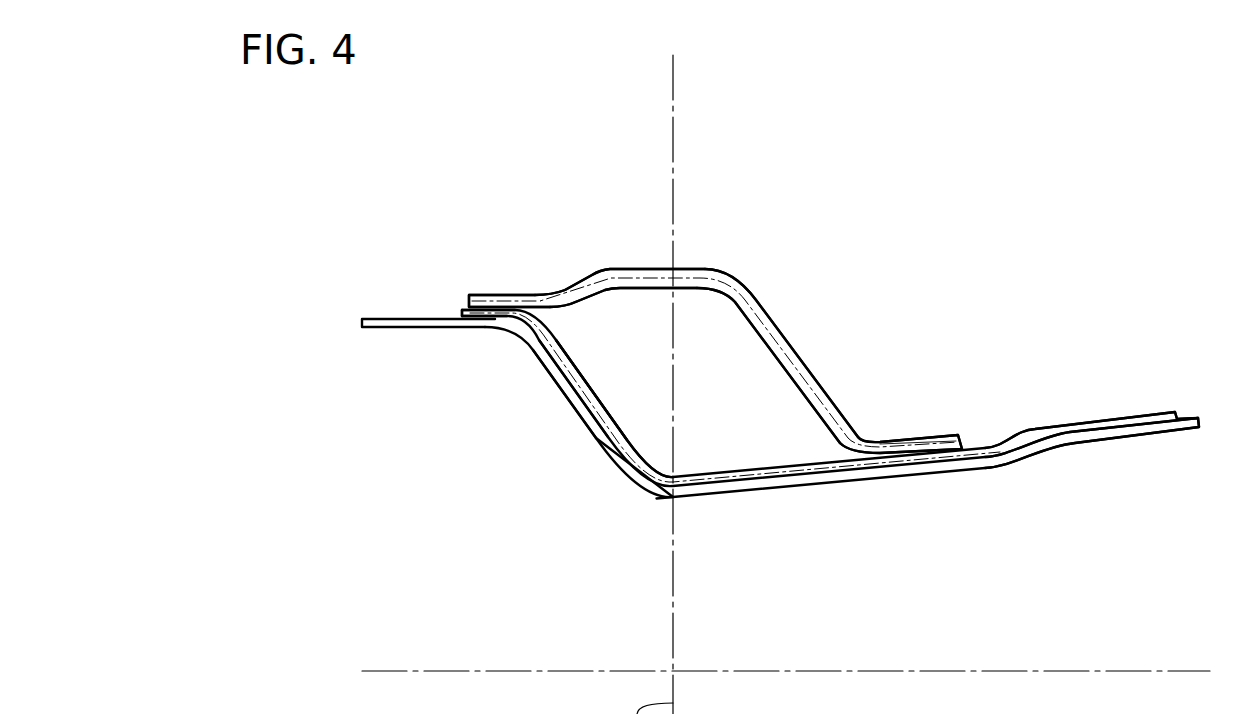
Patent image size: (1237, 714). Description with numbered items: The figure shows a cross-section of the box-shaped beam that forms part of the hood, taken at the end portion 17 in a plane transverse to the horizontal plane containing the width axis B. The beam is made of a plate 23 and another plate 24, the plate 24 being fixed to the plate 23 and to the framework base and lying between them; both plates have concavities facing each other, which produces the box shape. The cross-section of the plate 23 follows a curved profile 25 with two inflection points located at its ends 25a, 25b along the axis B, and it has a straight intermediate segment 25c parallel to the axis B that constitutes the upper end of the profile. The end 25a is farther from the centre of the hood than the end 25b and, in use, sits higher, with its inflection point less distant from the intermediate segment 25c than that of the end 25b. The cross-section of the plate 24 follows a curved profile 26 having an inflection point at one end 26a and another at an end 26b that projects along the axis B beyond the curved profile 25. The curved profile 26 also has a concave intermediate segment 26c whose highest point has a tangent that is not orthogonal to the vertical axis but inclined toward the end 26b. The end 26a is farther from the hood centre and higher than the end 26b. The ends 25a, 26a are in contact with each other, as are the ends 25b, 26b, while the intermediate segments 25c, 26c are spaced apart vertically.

The end portion 17 is at (378, 320).
The plate 23 is at (783, 331).
The plate 24 is at (607, 418).
The curved profile 25 is at (550, 298).
The end 25a is at (480, 302).
The end 25b is at (918, 438).
The intermediate segment 25c is at (650, 276).
The curved profile 26 is at (760, 490).
The end 26a is at (483, 318).
The end 26b is at (930, 458).
The intermediate segment 26c is at (617, 462).
The axis B is at (1130, 670).